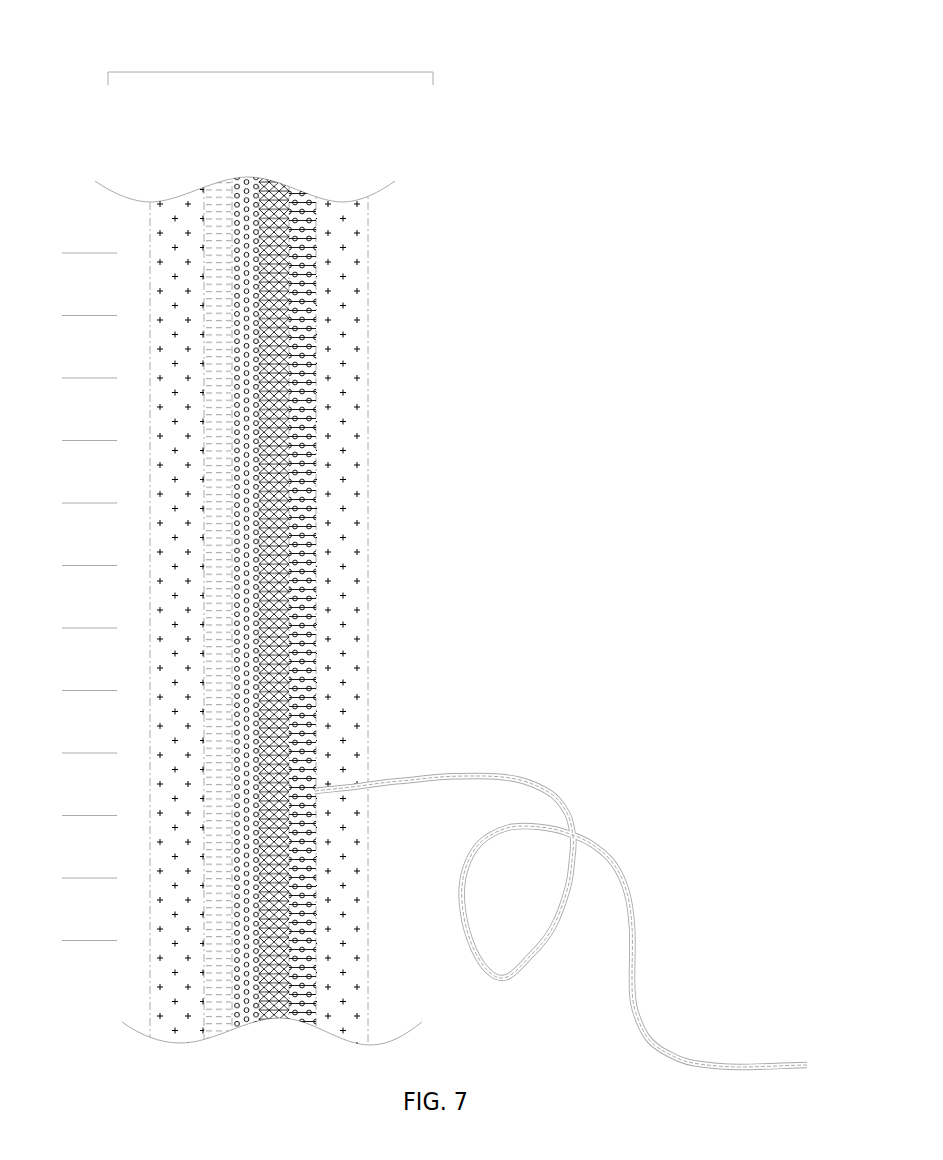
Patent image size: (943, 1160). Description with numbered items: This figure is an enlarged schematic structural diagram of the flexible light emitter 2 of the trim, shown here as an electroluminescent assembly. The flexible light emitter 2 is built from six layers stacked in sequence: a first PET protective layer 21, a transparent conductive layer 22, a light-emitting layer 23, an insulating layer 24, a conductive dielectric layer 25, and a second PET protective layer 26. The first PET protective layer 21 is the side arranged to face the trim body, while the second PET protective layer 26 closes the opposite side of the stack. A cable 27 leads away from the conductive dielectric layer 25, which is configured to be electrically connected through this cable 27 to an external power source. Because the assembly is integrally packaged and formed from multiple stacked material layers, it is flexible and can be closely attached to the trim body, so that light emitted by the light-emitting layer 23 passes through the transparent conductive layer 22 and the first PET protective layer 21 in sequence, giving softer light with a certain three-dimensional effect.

The flexible light emitter 2 is at (272, 70).
The first PET protective layer 21 is at (183, 227).
The transparent conductive layer 22 is at (218, 195).
The light-emitting layer 23 is at (243, 178).
The insulating layer 24 is at (275, 180).
The conductive dielectric layer 25 is at (312, 197).
The second PET protective layer 26 is at (340, 248).
The cable 27 is at (485, 773).